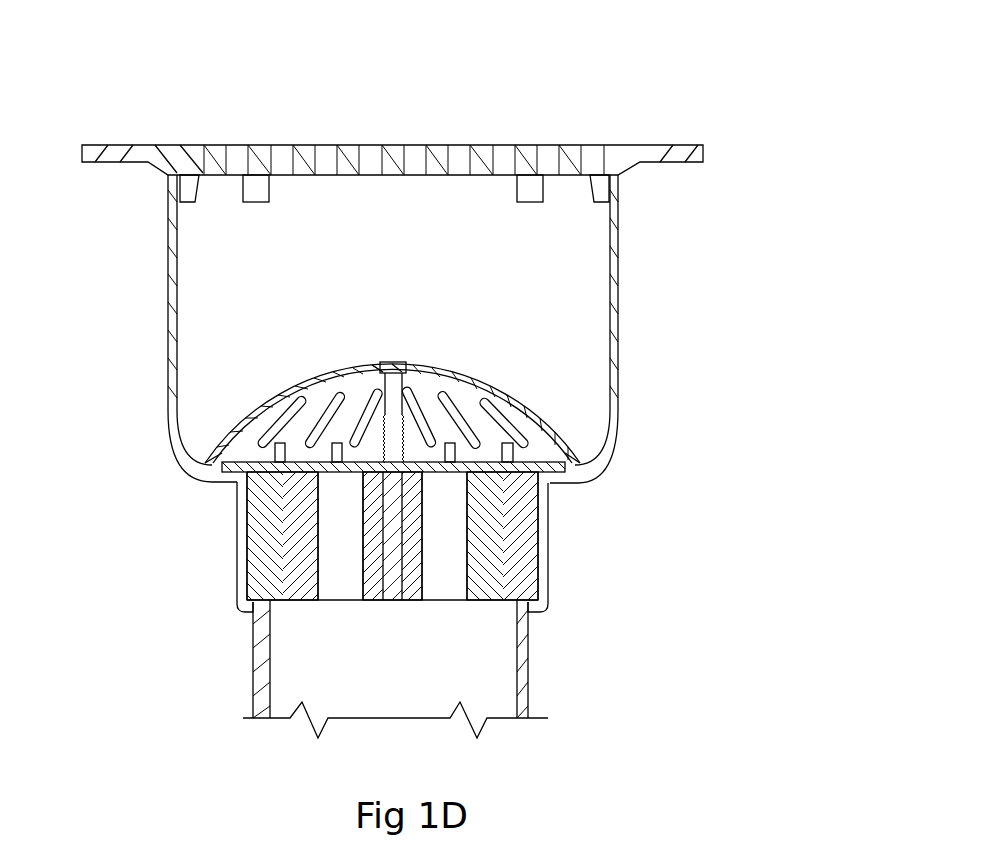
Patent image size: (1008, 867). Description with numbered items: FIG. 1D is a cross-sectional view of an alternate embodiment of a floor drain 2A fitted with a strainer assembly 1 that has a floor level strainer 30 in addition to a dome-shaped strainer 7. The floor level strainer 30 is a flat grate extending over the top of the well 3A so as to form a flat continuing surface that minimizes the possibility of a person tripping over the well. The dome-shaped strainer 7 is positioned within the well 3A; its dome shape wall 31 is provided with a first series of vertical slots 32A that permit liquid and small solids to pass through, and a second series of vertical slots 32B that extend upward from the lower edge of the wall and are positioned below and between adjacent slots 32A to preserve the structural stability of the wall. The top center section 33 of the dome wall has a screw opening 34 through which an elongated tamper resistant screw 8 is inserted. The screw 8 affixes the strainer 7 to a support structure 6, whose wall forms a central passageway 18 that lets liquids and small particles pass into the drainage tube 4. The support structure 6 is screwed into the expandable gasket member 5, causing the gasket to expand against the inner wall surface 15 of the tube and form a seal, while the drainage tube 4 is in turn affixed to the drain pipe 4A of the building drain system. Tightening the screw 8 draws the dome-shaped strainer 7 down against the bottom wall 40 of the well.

The strainer assembly 1 is at (316, 310).
The floor level strainer 30 is at (556, 130).
The well 3A is at (168, 326).
The floor drain 2A is at (650, 290).
The dome-shaped strainer 7 is at (493, 372).
The top center section 33 is at (380, 366).
The dome shape wall 31 is at (290, 386).
The first series of vertical slots 32A is at (250, 406).
The second series of vertical slots 32B is at (520, 453).
The tamper resistant screw 8 is at (398, 350).
The screw opening 34 is at (430, 370).
The drainage tube 4 is at (552, 555).
The inner wall surface 15 is at (550, 523).
The bottom wall 40 is at (222, 487).
The expandable gasket member 5 is at (245, 556).
The central passageway 18 is at (358, 548).
The support structure 6 is at (478, 595).
The drain pipe 4A is at (530, 660).